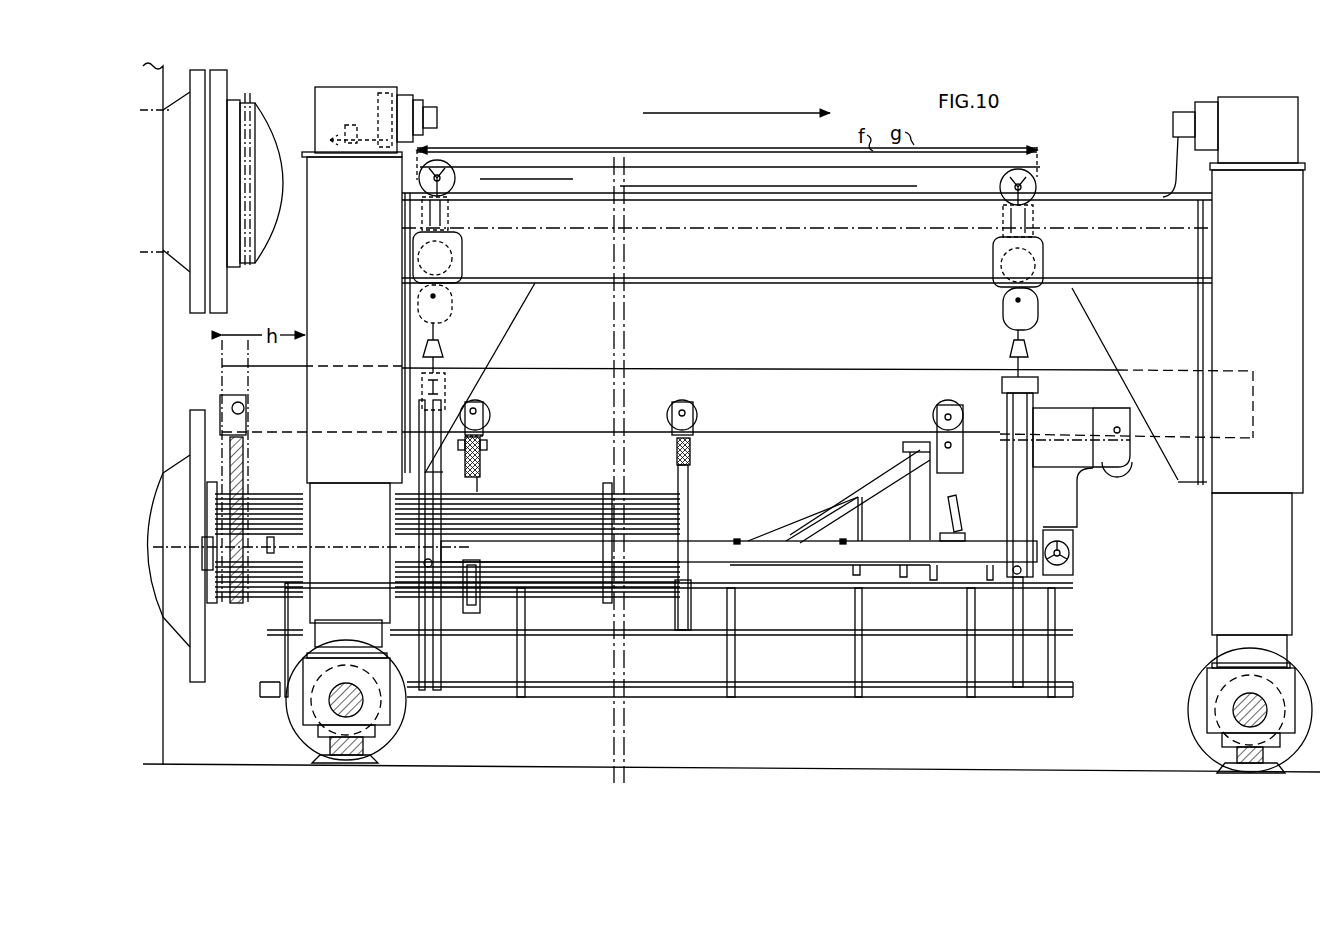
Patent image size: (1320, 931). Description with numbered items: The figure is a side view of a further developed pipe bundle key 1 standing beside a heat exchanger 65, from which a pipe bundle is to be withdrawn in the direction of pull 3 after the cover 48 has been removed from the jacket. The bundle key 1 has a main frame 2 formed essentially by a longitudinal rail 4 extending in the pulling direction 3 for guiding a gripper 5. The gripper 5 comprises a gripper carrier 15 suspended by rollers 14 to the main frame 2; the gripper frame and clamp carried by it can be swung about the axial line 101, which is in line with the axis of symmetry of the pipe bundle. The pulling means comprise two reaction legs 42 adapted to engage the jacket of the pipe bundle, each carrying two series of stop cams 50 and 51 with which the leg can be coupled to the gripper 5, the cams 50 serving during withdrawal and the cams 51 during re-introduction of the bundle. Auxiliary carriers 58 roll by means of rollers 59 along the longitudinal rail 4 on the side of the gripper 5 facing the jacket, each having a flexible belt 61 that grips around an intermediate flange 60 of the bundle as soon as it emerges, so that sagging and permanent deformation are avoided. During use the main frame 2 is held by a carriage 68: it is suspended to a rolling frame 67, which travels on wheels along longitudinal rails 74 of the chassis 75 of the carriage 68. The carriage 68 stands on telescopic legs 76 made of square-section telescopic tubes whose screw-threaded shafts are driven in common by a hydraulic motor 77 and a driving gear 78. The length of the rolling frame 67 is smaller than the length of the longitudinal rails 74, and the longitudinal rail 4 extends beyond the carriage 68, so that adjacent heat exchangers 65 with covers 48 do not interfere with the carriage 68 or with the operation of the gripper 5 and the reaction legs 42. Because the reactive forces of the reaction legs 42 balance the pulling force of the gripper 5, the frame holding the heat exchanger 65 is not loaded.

The pipe bundle key 1 is at (1091, 558).
The main frame 2 is at (774, 369).
The direction of pull 3 is at (744, 109).
The longitudinal rail 4 is at (698, 396).
The gripper 5 is at (1081, 505).
The rollers 14 is at (1125, 470).
The gripper carrier 15 is at (1057, 420).
The reaction legs 42 is at (545, 548).
The cover 48 is at (268, 127).
The stop cams 50 is at (927, 543).
The stop cams 51 is at (843, 544).
The auxiliary carriers 58 is at (482, 432).
The rollers 59 is at (487, 412).
The intermediate flange 60 is at (474, 570).
The flexible belt 61 is at (481, 468).
The heat exchangers 65 is at (152, 622).
The rolling frame 67 is at (732, 170).
The carriage 68 is at (1233, 473).
The longitudinal rails 74 is at (1082, 200).
The chassis 75 is at (1151, 357).
The telescopic legs 76 is at (1230, 542).
The hydraulic motor 77 is at (432, 119).
The driving gear 78 is at (330, 111).
The axial line 101 is at (181, 536).